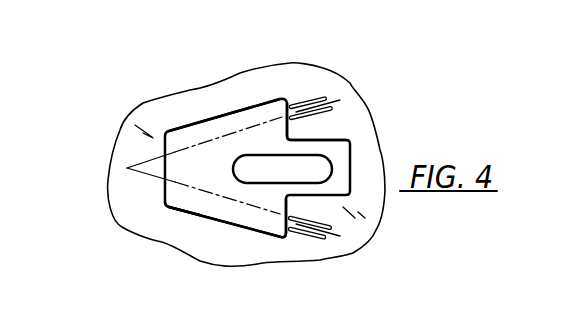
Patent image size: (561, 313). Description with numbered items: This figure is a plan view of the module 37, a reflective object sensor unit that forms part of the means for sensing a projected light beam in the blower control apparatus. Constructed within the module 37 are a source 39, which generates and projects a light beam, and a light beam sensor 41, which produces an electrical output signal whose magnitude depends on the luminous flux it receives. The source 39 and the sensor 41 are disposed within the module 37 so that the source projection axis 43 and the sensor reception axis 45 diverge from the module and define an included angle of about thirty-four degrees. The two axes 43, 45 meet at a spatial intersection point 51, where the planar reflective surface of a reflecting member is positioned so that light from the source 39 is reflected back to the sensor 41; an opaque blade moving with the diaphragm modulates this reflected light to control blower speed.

The module 37 is at (202, 247).
The source 39 is at (265, 110).
The light beam sensor 41 is at (261, 226).
The source projection axis 43 is at (220, 140).
The sensor reception axis 45 is at (178, 195).
The spatial intersection point 51 is at (127, 168).